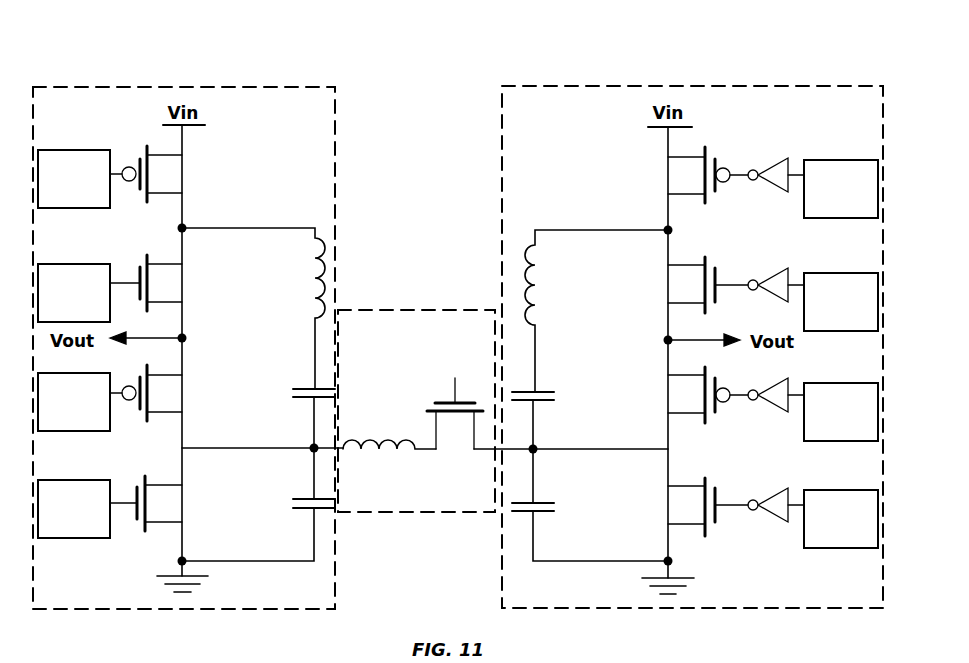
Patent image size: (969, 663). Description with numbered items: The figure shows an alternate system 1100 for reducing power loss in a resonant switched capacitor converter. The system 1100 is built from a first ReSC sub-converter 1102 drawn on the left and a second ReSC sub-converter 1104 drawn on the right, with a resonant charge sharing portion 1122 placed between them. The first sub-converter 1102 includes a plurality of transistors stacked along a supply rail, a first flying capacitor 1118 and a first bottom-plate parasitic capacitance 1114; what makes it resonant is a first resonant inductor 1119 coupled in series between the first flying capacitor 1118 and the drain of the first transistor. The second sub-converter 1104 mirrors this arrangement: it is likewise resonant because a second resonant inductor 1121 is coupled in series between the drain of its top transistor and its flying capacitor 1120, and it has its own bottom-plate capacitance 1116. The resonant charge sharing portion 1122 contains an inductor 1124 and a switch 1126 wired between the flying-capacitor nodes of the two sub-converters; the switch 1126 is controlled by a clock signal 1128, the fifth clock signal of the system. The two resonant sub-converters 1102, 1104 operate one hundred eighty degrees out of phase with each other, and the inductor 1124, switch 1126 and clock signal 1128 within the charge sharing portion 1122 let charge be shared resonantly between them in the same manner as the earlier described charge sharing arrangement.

The alternate system for reducing power loss in a ReSC converter 1100 is at (158, 42).
The first ReSC sub-converter 1102 is at (290, 87).
The second ReSC sub-converter 1104 is at (557, 86).
The first bottom-plate parasitic capacitance 1114 is at (258, 528).
The bypass capacitor Cbp2 1116 is at (590, 528).
The first flying capacitor 1118 is at (291, 444).
The first resonant inductor 1119 is at (253, 308).
The flying capacitor 1120 is at (556, 447).
The second resonant inductor 1121 is at (596, 311).
The resonant charge sharing portion 1122 is at (408, 310).
The inductor 1124 is at (389, 419).
The switch 1126 is at (479, 446).
The clock signal 1128 is at (454, 372).